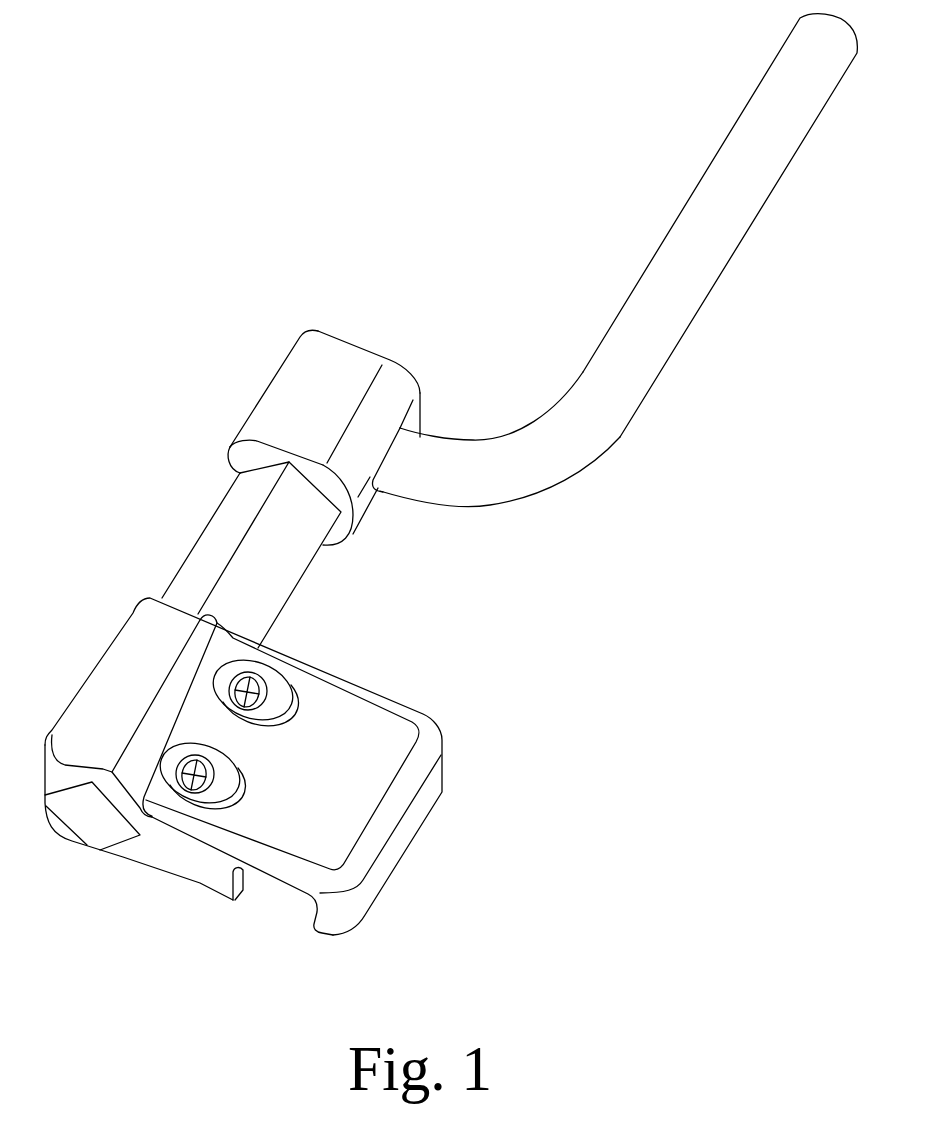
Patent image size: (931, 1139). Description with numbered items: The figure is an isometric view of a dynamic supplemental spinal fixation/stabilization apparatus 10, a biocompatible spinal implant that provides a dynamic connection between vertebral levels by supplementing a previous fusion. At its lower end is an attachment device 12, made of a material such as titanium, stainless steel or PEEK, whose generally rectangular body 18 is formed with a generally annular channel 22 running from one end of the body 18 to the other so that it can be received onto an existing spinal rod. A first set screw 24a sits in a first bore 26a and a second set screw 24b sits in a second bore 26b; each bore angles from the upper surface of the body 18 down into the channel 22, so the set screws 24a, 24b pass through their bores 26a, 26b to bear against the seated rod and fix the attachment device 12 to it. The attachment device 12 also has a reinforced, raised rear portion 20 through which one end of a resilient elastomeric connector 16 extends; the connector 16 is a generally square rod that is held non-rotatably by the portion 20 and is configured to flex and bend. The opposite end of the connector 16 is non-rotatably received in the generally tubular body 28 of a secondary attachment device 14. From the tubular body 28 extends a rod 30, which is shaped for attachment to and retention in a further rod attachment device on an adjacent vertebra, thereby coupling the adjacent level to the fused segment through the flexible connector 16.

The dynamic supplemental spinal fixation/stabilization apparatus 10 is at (150, 127).
The attachment device 12 is at (450, 721).
The secondary attachment device 14 is at (260, 381).
The elastomeric connector 16 is at (243, 553).
The body 18 is at (355, 790).
The raised rear portion 20 is at (113, 668).
The channel 22 is at (267, 914).
The first set screw 24a is at (275, 681).
The second set screw 24b is at (215, 783).
The first bore 26a is at (228, 667).
The second bore 26b is at (177, 758).
The tubular body 28 is at (343, 354).
The rod 30 is at (718, 183).